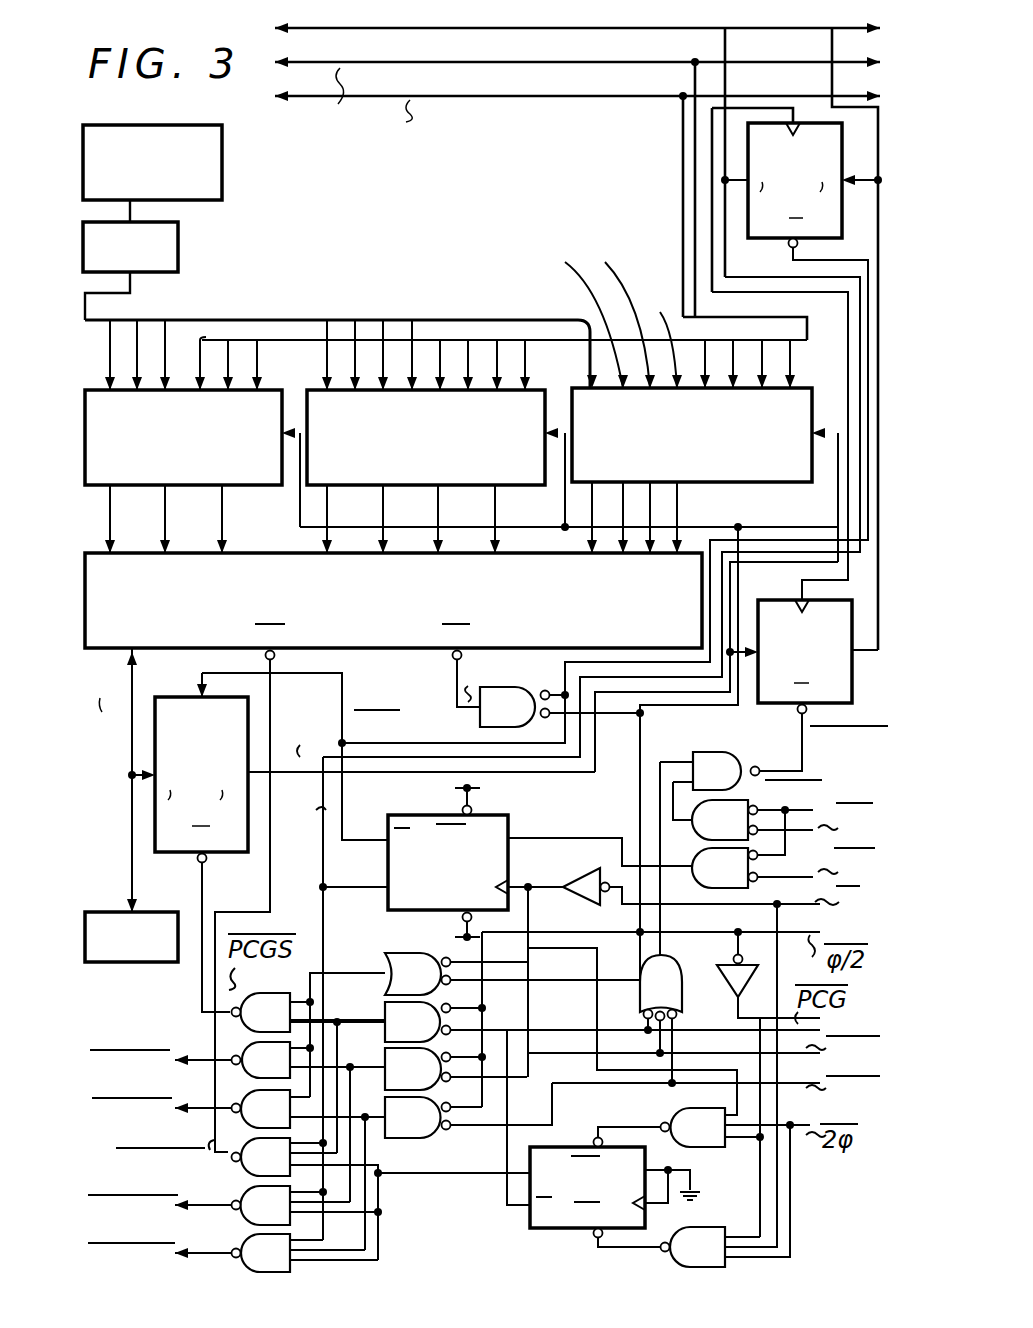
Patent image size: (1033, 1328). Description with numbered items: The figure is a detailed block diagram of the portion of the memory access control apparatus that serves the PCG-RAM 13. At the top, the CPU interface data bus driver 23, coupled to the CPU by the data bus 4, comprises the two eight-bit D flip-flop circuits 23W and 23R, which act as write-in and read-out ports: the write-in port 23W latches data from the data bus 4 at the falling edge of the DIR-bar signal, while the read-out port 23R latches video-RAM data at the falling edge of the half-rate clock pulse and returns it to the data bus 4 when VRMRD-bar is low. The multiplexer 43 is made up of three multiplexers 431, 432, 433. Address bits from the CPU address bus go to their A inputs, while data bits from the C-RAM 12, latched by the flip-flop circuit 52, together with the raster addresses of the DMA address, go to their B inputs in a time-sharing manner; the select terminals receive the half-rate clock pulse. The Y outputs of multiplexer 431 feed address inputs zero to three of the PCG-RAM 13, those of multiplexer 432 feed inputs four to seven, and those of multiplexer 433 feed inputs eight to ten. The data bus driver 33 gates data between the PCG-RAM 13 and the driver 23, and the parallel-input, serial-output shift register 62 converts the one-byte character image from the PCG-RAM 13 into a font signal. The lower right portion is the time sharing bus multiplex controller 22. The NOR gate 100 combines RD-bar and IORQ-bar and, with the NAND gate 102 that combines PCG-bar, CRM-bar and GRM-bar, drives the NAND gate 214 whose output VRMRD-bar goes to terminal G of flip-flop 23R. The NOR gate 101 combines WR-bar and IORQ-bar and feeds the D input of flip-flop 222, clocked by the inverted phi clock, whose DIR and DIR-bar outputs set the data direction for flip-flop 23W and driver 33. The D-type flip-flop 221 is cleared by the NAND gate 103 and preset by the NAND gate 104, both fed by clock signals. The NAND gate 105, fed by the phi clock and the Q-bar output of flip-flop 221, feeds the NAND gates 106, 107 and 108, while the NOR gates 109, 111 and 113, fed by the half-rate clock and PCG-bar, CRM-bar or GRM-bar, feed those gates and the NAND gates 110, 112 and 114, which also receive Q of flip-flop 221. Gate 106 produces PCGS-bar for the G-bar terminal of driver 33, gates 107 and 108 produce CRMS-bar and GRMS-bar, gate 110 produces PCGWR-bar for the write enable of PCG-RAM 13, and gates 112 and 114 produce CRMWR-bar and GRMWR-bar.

The data bus 4 is at (858, 32).
The C-RAM 12 is at (222, 172).
The flip-flop circuit 52 is at (178, 258).
The multiplexer 43 is at (360, 310).
The multiplexer 433 is at (240, 490).
The multiplexer 432 is at (503, 490).
The multiplexer 431 is at (768, 488).
The CPU interface data bus driver 23 is at (838, 383).
The write-in port flip-flop circuit 23W is at (748, 225).
The read-out port flip-flop circuit 23R is at (756, 617).
The PCG-RAM 13 is at (395, 660).
The data bus driver 33 is at (178, 860).
The parallel input and serial output shift register 62 is at (150, 965).
The flip-flop 222 is at (385, 905).
The D-type flip-flop 221 is at (528, 1230).
The NAND gate 214 is at (732, 751).
The NOR gate 100 is at (782, 817).
The NOR gate 101 is at (783, 868).
The NAND gate 102 is at (664, 1080).
The NAND gate 103 is at (695, 1247).
The NAND gate 104 is at (664, 1127).
The NAND gate 105 is at (475, 1025).
The NAND gate 106 is at (309, 1012).
The NAND gate 107 is at (220, 1061).
The NAND gate 108 is at (228, 1109).
The NOR gate 109 is at (386, 1077).
The NAND gate 110 is at (249, 1199).
The NOR gate 111 is at (408, 1125).
The NAND gate 112 is at (235, 1206).
The NOR gate 113 is at (386, 1173).
The NAND gate 114 is at (233, 1254).
The time sharing bus multiplex controller 22 is at (848, 1234).